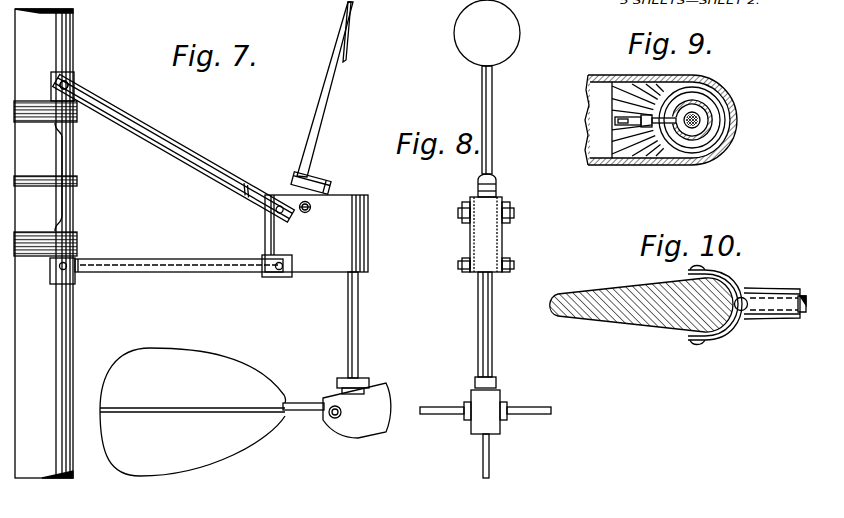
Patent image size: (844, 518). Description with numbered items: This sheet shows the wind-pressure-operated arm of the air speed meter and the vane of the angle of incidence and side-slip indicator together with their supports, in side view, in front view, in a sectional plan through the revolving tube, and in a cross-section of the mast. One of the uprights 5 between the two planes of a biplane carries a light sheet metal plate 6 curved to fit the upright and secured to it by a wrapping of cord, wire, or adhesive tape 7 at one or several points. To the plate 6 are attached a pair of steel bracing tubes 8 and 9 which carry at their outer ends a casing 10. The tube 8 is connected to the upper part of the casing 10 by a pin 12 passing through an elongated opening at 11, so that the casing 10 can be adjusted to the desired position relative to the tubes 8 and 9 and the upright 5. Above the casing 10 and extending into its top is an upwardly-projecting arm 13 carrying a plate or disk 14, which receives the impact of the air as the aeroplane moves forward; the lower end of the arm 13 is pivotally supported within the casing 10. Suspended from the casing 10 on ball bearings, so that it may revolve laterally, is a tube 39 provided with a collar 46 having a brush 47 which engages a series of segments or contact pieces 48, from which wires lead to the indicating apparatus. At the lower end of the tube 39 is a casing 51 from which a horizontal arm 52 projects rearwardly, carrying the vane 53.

In FIG. 7, the upright 5 is at (74, 325).
In FIG. 10, the upright 5 is at (640, 326).
In FIG. 7, the sheet metal plate 6 is at (66, 226).
In FIG. 10, the sheet metal plate 6 is at (683, 339).
In FIG. 7, the wrapping 7 is at (76, 118).
In FIG. 7, the bracing tube 8 is at (212, 167).
In FIG. 8, the bracing tube 8 is at (461, 206).
In FIG. 10, the bracing tube 8 is at (775, 291).
In FIG. 7, the bracing tube 9 is at (170, 262).
In FIG. 8, the bracing tube 9 is at (462, 270).
In FIG. 7, the casing 10 is at (83, 253).
In FIG. 8, the casing 10 is at (490, 243).
In FIG. 9, the casing 10 is at (718, 82).
In FIG. 7, the elongated opening 11 is at (290, 214).
In FIG. 7, the pin 12 is at (264, 219).
In FIG. 8, the pin 12 is at (468, 228).
In FIG. 7, the arm 13 is at (338, 108).
In FIG. 8, the arm 13 is at (494, 110).
In FIG. 7, the plate or disk 14 is at (353, 34).
In FIG. 8, the plate or disk 14 is at (487, 33).
In FIG. 7, the tube 39 is at (360, 303).
In FIG. 8, the tube 39 is at (485, 375).
In FIG. 9, the tube 39 is at (716, 109).
In FIG. 9, the collar 46 is at (720, 127).
In FIG. 9, the brush 47 is at (636, 128).
In FIG. 9, the contact pieces 48 is at (616, 150).
In FIG. 7, the casing 51 is at (387, 401).
In FIG. 7, the horizontal arm 52 is at (302, 403).
In FIG. 7, the vane 53 is at (232, 365).